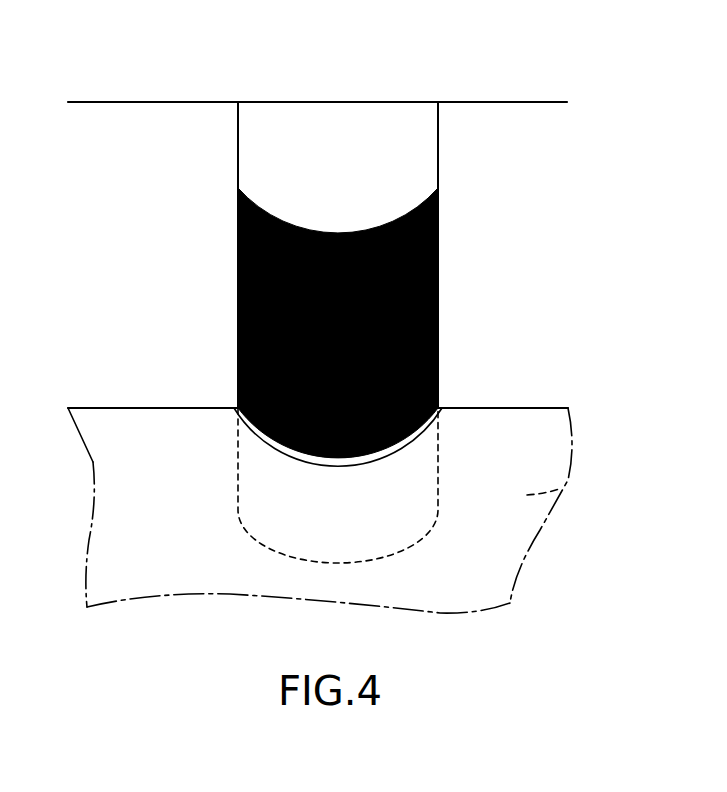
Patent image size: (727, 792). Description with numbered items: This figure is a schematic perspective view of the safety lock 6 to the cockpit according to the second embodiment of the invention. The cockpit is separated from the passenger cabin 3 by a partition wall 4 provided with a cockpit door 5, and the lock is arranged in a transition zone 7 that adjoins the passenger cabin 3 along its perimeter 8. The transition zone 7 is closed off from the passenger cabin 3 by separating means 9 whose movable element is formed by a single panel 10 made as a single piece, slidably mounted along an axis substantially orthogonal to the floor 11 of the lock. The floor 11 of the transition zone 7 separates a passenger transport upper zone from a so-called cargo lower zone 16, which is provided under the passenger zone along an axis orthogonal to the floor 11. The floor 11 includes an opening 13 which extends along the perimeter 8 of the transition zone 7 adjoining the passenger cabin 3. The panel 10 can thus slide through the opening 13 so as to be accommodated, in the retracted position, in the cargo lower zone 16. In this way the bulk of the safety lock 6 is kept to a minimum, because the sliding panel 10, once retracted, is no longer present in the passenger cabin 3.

The passenger cabin 3 is at (150, 418).
The partition wall 4 is at (152, 115).
The cockpit door 5 is at (410, 110).
The safety lock 6 is at (130, 179).
The transition zone 7 is at (430, 171).
The perimeter 8 is at (282, 455).
The separating means 9 is at (195, 266).
The single panel 10 is at (407, 312).
The floor 11 is at (490, 427).
The opening 13 is at (400, 447).
The cargo lower zone 16 is at (562, 488).